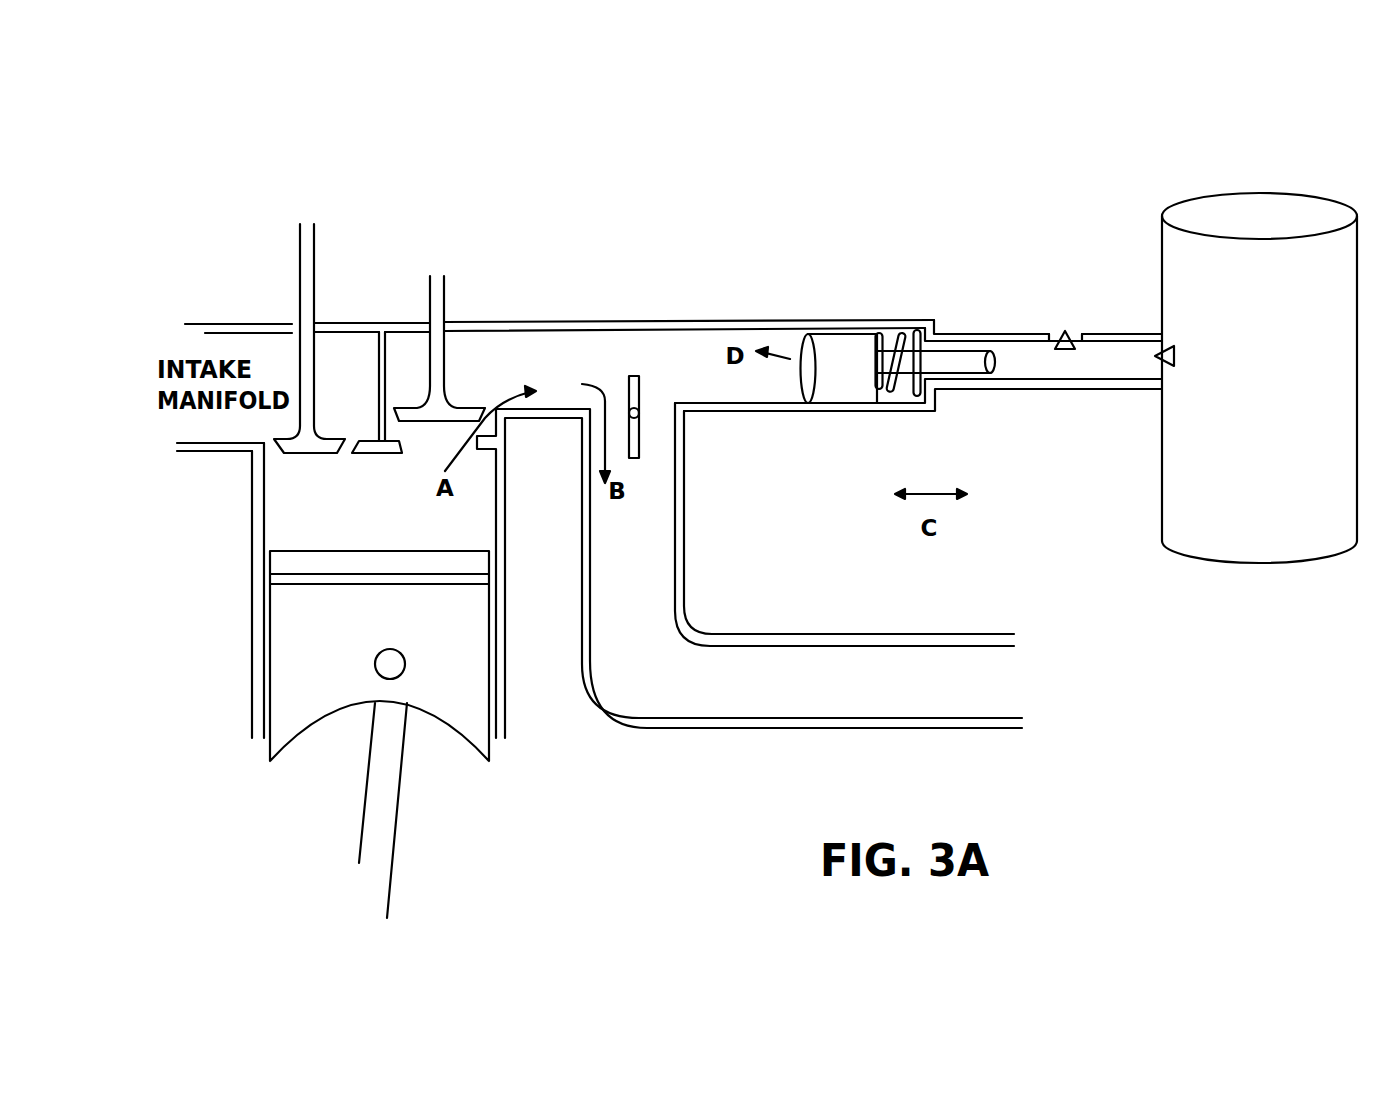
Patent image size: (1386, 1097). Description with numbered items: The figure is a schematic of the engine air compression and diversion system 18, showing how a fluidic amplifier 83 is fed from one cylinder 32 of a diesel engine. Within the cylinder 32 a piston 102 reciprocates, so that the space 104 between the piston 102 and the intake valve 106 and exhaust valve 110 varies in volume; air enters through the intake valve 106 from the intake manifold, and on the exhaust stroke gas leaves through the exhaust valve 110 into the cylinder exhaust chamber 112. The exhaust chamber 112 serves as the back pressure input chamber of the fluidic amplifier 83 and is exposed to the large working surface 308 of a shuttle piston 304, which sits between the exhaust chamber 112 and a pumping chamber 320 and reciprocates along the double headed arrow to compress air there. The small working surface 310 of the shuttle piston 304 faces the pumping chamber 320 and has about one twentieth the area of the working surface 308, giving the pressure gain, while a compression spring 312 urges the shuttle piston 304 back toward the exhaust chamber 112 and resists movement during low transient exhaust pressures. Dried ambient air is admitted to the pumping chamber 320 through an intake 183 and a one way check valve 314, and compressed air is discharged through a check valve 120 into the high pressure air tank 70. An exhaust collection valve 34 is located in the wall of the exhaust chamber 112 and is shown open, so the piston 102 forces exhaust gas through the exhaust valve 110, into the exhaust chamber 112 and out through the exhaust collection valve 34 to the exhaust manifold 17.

The engine air compression and diversion system 18 is at (687, 257).
The cylinder 32 is at (507, 665).
The exhaust collection valve 34 is at (638, 445).
The high pressure air tank 70 is at (1183, 507).
The fluidic amplifier 83 is at (918, 337).
The piston 102 is at (317, 692).
The space 104 is at (427, 543).
The intake valve 106 is at (323, 432).
The exhaust valve 110 is at (468, 407).
The cylinder exhaust chamber 112 is at (615, 363).
The check valve 120 is at (1172, 348).
The intake 183 is at (1076, 333).
The shuttle piston 304 is at (850, 395).
The working surface 308 is at (805, 380).
The working surface 310 is at (990, 380).
The compression spring 312 is at (925, 318).
The one way check valve 314 is at (1048, 334).
The pumping chamber 320 is at (1093, 367).
The exhaust manifold 17 is at (982, 670).